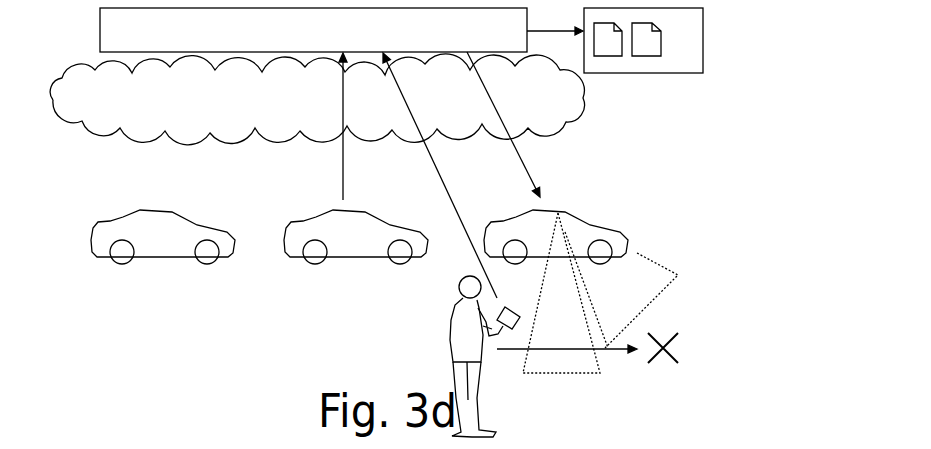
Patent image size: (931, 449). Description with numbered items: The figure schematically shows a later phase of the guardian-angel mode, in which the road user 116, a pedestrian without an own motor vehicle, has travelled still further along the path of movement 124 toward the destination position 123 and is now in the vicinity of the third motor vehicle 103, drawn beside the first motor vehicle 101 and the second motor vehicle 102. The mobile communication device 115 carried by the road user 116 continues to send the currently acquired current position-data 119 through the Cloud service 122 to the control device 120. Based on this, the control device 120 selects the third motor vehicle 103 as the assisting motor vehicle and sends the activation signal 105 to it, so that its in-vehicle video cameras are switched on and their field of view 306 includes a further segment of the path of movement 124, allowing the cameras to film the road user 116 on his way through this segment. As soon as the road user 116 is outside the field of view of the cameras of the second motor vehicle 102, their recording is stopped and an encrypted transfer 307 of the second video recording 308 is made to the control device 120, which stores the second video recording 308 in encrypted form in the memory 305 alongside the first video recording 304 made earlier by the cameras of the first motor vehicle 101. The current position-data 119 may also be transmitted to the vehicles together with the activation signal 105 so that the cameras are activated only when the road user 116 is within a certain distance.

The first motor vehicle 101 is at (141, 211).
The second motor vehicle 102 is at (315, 222).
The third motor vehicle 103 is at (508, 214).
The activation signal 105 is at (528, 163).
The mobile communication device 115 is at (509, 322).
The road user 116 is at (453, 342).
The current position-data 119 is at (423, 152).
The control device 120 is at (337, 45).
The Cloud service 122 is at (333, 108).
The destination position 123 is at (669, 324).
The path of movement 124 is at (606, 357).
The first video recording 304 is at (606, 57).
The memory 305 is at (703, 35).
The field of view 306 is at (640, 257).
The encrypted transfer 307 is at (334, 163).
The second video recording 308 is at (648, 57).